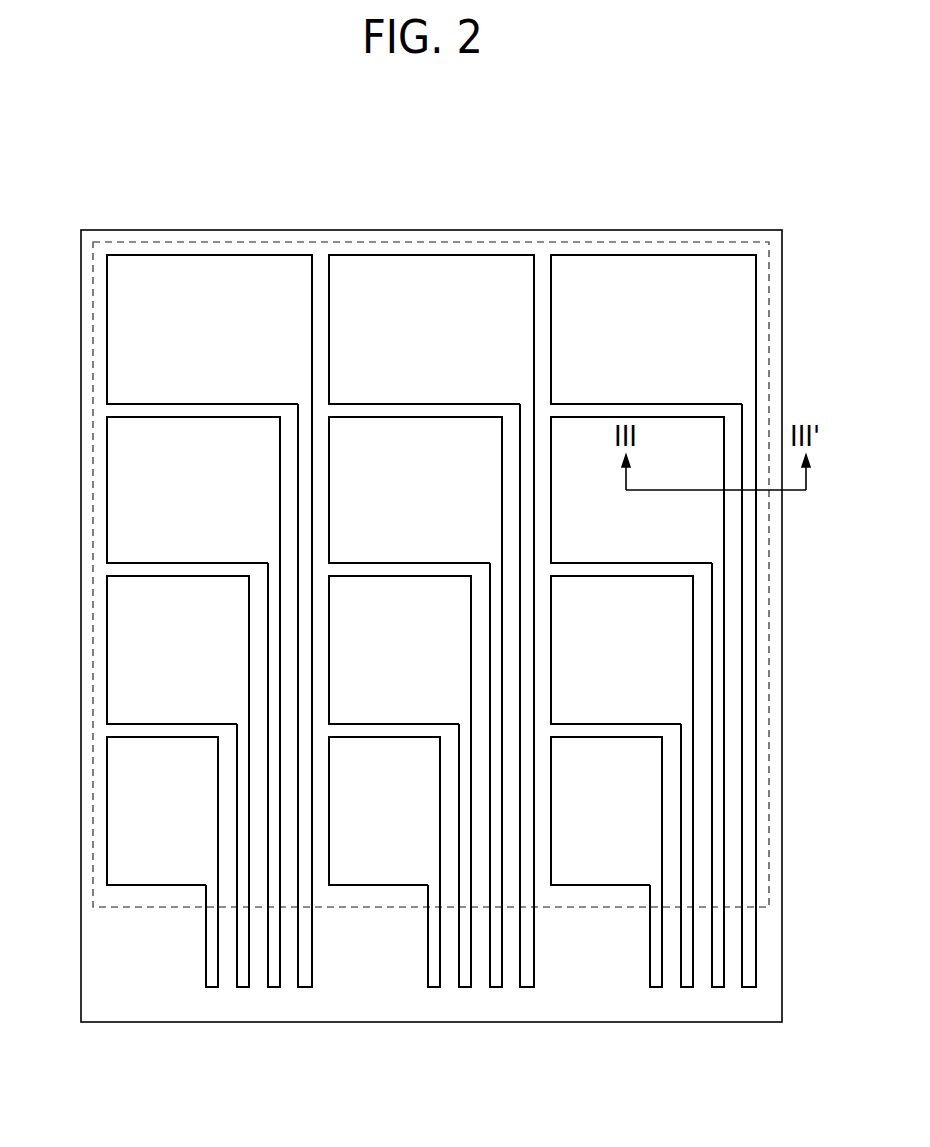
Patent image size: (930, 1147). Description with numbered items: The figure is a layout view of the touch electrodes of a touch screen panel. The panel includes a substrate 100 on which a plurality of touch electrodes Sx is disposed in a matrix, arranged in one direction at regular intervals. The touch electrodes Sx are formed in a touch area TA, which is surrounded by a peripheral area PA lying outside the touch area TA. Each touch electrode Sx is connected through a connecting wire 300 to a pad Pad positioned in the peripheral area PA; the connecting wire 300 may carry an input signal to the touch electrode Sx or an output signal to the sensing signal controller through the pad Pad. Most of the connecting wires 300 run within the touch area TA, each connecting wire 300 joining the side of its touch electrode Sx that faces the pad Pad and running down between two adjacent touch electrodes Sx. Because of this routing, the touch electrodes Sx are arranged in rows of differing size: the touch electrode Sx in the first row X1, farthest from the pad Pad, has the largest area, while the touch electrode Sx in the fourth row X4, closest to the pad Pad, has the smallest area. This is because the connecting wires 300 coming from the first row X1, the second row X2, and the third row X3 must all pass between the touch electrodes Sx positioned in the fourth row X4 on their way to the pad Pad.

The substrate 100 is at (608, 1023).
The connecting wire 300 is at (237, 858).
The touch electrode Sx is at (398, 527).
The touch area TA is at (598, 242).
The peripheral area PA is at (743, 236).
The pad Pad is at (206, 959).
The first row X1 is at (398, 329).
The second row X2 is at (382, 490).
The third row X3 is at (366, 650).
The fourth row X4 is at (351, 811).